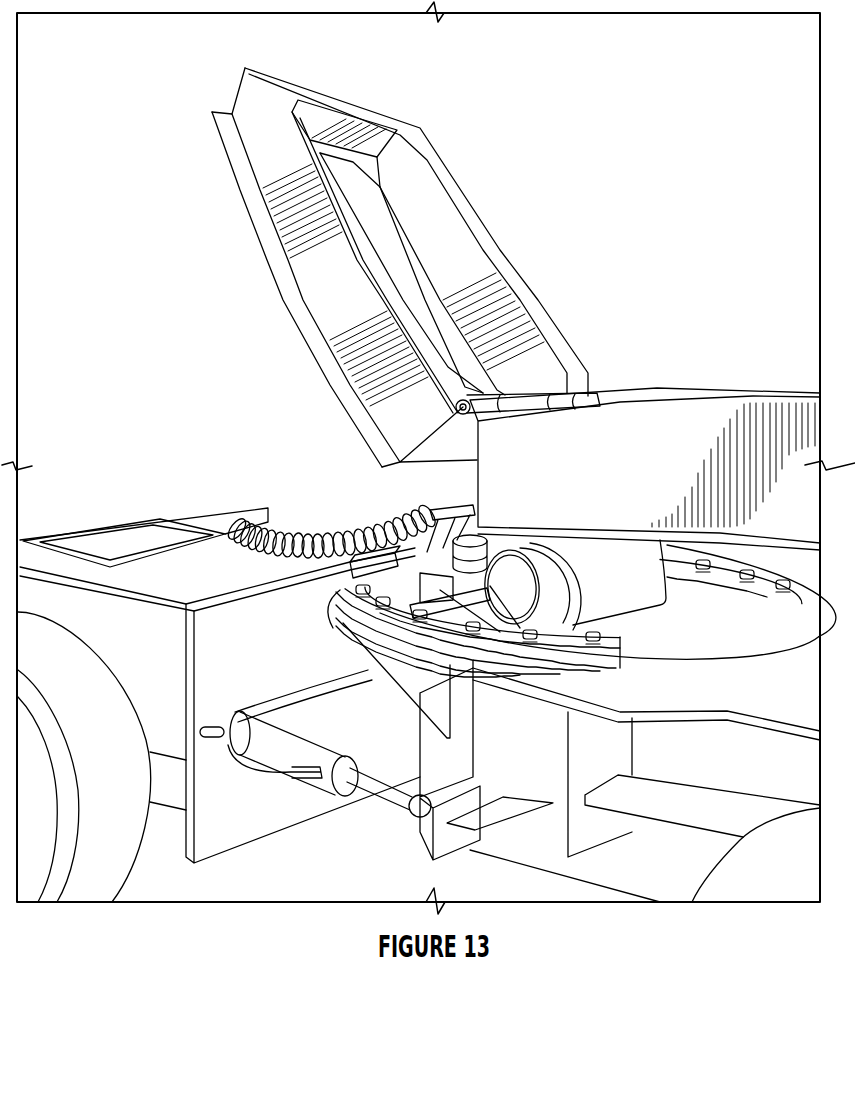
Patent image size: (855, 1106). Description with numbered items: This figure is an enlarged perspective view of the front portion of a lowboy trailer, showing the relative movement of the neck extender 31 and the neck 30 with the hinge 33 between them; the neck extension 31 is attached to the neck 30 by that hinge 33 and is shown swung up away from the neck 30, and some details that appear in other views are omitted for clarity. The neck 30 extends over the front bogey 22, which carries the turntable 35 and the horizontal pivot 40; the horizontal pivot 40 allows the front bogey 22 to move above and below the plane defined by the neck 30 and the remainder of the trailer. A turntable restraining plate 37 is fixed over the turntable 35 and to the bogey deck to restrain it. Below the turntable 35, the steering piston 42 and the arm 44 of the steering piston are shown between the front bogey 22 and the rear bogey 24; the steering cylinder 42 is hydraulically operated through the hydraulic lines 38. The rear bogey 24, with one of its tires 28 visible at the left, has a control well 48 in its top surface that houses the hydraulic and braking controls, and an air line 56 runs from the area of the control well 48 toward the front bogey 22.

The front bogey 22 is at (688, 766).
The rear bogey 24 is at (233, 651).
The tires 28 is at (91, 843).
The neck 30 is at (578, 478).
The neck extension 31 is at (317, 296).
The hinge 33 is at (589, 391).
The turntable 35 is at (692, 634).
The turntable restraining plate 37 is at (588, 676).
The hydraulic lines 38 is at (350, 694).
The horizontal pivot 40 is at (499, 599).
The steering piston 42 is at (261, 758).
The arm of the steering piston 44 is at (387, 795).
The control well 48 is at (120, 546).
The air line 56 is at (337, 530).